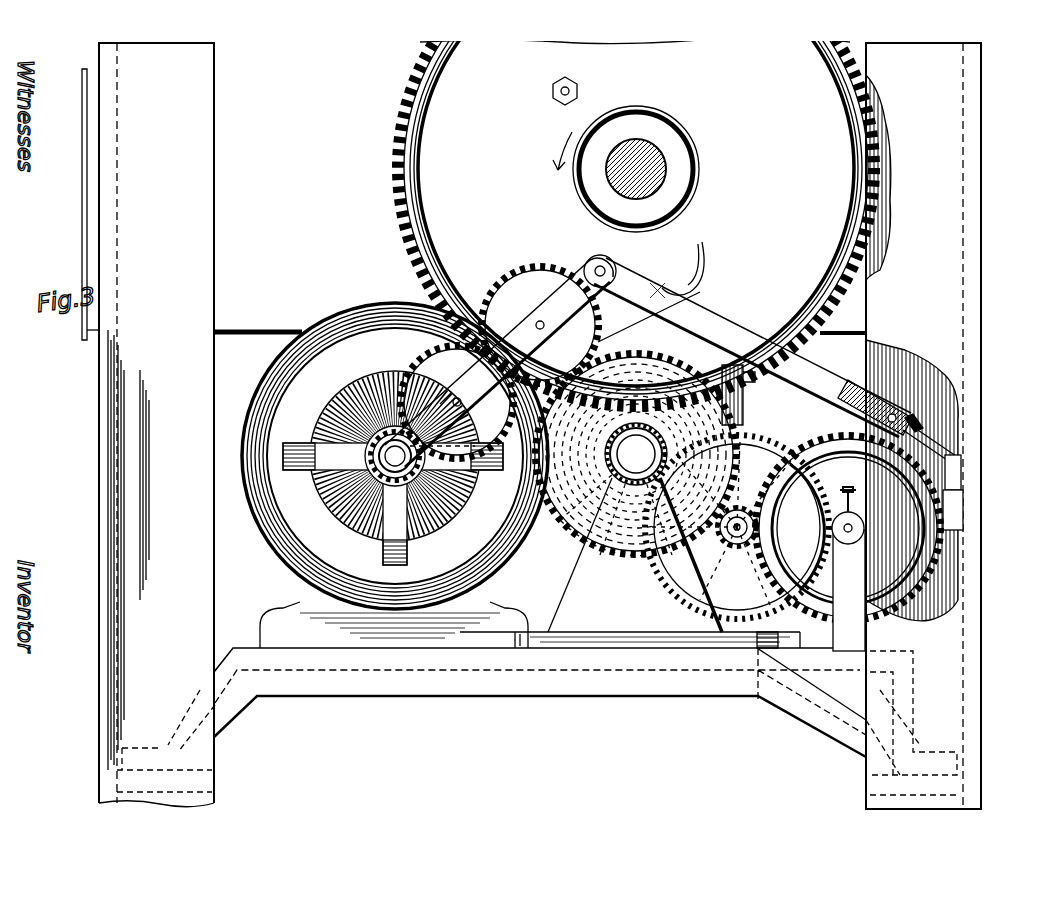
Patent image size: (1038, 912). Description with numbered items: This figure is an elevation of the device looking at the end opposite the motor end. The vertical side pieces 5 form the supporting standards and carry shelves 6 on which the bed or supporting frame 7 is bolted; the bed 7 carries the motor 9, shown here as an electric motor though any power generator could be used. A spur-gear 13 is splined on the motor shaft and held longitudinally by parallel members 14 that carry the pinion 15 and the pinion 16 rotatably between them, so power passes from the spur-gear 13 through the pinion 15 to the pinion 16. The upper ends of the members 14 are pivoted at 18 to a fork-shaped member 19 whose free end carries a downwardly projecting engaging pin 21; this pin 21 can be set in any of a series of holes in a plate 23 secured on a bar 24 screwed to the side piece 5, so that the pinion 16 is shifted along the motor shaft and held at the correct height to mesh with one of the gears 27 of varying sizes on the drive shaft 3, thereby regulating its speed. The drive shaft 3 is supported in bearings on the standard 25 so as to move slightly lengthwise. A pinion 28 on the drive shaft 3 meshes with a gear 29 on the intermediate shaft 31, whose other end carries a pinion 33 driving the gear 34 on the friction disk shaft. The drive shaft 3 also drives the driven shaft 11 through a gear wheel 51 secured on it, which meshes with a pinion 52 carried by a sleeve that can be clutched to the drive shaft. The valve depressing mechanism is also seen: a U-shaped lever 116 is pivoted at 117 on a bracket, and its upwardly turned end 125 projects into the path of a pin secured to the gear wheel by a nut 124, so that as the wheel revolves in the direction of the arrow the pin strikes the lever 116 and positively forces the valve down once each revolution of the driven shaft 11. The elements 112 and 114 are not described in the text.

The drive shaft 3 is at (636, 454).
The vertical side pieces 5 is at (214, 282).
The shelves 6 is at (214, 782).
The bed or supporting frame 7 is at (547, 685).
The motor 9 is at (275, 552).
The driven shaft 11 is at (662, 158).
The spur-gear 13 is at (405, 445).
The parallel members 14 is at (460, 402).
The pinion 15 is at (447, 400).
The pinion 16 is at (499, 362).
The pivotal connection 18 is at (606, 270).
The fork-shaped member 19 is at (720, 328).
The engaging pin 21 is at (878, 405).
The plate 23 is at (929, 435).
The bar 24 is at (961, 470).
The support or standard 25 is at (616, 538).
The gears 27 is at (563, 542).
The pinion 28 is at (636, 454).
The gear 29 is at (640, 575).
The intermediate shaft 31 is at (722, 536).
The pinion 33 is at (737, 527).
The gear 34 is at (848, 544).
The gear wheel 51 is at (636, 203).
The pinion 52 is at (636, 460).
The bar 112 is at (270, 330).
The strip 114 is at (82, 185).
The U-shaped lever 116 is at (622, 320).
The pivot 117 is at (600, 406).
The nut 124 is at (572, 92).
The upwardly turned end 125 is at (702, 252).